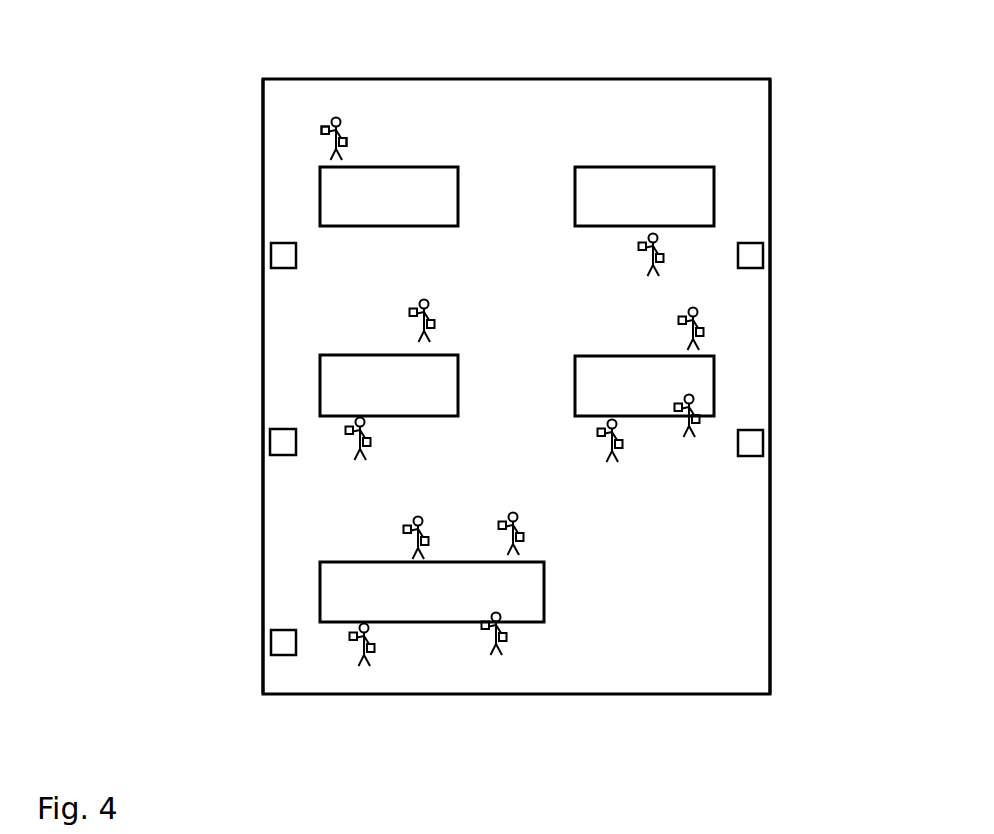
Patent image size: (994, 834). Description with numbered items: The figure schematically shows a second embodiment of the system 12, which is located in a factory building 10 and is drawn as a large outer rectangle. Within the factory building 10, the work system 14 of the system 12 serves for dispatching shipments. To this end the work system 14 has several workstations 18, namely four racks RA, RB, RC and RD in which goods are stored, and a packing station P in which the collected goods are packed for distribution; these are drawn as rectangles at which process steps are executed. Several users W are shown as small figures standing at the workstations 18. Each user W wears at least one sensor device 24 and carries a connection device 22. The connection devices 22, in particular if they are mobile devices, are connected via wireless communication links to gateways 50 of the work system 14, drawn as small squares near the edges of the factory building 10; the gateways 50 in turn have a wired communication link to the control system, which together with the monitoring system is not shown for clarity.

The factory building 10 is at (138, 82).
The system 12 is at (241, 85).
The work system 14 is at (818, 98).
The workstations 18 is at (350, 198).
The connection devices 22 is at (348, 142).
The sensor devices 24 is at (322, 128).
The gateways 50 is at (752, 443).
The users W is at (350, 104).